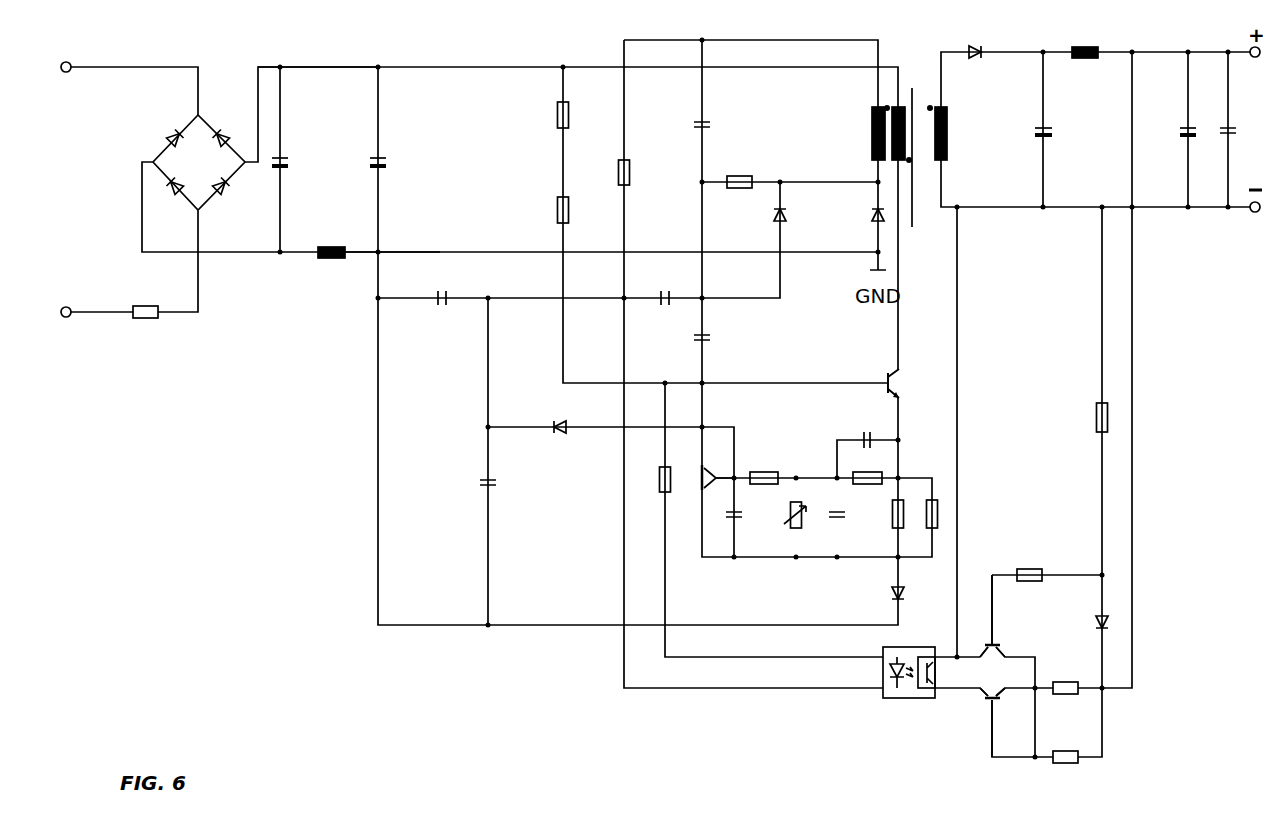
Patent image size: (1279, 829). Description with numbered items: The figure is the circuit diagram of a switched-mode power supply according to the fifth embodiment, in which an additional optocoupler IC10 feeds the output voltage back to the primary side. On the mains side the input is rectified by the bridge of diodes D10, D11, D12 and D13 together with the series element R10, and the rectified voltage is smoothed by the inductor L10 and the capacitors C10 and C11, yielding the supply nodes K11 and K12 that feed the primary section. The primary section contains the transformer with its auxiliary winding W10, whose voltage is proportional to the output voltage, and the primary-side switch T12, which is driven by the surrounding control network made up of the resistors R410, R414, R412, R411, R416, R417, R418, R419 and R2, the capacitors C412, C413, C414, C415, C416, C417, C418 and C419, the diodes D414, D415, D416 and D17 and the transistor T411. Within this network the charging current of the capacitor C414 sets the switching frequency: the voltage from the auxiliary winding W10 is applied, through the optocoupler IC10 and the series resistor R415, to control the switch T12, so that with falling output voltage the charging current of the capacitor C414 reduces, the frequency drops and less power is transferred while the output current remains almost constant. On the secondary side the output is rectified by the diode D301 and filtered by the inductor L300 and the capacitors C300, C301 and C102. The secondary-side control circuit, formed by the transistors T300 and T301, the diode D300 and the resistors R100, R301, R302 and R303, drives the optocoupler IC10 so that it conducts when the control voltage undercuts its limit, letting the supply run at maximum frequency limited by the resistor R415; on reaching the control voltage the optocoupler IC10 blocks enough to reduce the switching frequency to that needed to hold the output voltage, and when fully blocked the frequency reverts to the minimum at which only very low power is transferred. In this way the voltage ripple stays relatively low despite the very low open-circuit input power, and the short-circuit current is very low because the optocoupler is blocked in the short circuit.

The bridge rectifier diode D10 is at (236, 120).
The bridge rectifier diode D11 is at (158, 121).
The bridge rectifier diode D12 is at (192, 175).
The bridge rectifier diode D13 is at (231, 169).
The input resistor R10 is at (156, 301).
The input filter inductor L10 is at (338, 242).
The input filter capacitor C10 is at (294, 159).
The input filter capacitor C11 is at (368, 151).
The supply node K11 is at (333, 52).
The supply node K12 is at (392, 235).
The resistor R410 is at (552, 101).
The resistor R414 is at (552, 197).
The resistor R412 is at (614, 160).
The capacitor C412 is at (693, 110).
The capacitor C413 is at (459, 288).
The capacitor C414 is at (669, 288).
The resistor R411 is at (756, 172).
The diode D415 is at (757, 225).
The diode D416 is at (851, 225).
The auxiliary winding W10 is at (890, 126).
The capacitor C415 is at (734, 347).
The primary-side switch T12 is at (919, 383).
The diode D414 is at (579, 416).
The capacitor C417 is at (477, 470).
The resistor R415 is at (654, 465).
The transistor T411 is at (705, 478).
The capacitor C418 is at (723, 522).
The resistor R416 is at (779, 467).
The variable resistor R417 is at (785, 520).
The capacitor C419 is at (827, 520).
The capacitor C416 is at (871, 428).
The resistor R418 is at (871, 467).
The resistor R419 is at (887, 520).
The resistor R2 is at (945, 515).
The diode D17 is at (887, 582).
The output rectifier diode D301 is at (992, 42).
The output filter inductor L300 is at (1097, 42).
The output filter capacitor C300 is at (1033, 120).
The output filter capacitor C301 is at (1178, 120).
The output capacitor C102 is at (1218, 120).
The resistor R100 is at (1091, 405).
The resistor R301 is at (1043, 566).
The zener diode D300 is at (1091, 613).
The transistor T300 is at (1021, 616).
The transistor T301 is at (999, 710).
The resistor R302 is at (1080, 677).
The resistor R303 is at (1080, 746).
The optocoupler IC10 is at (905, 679).